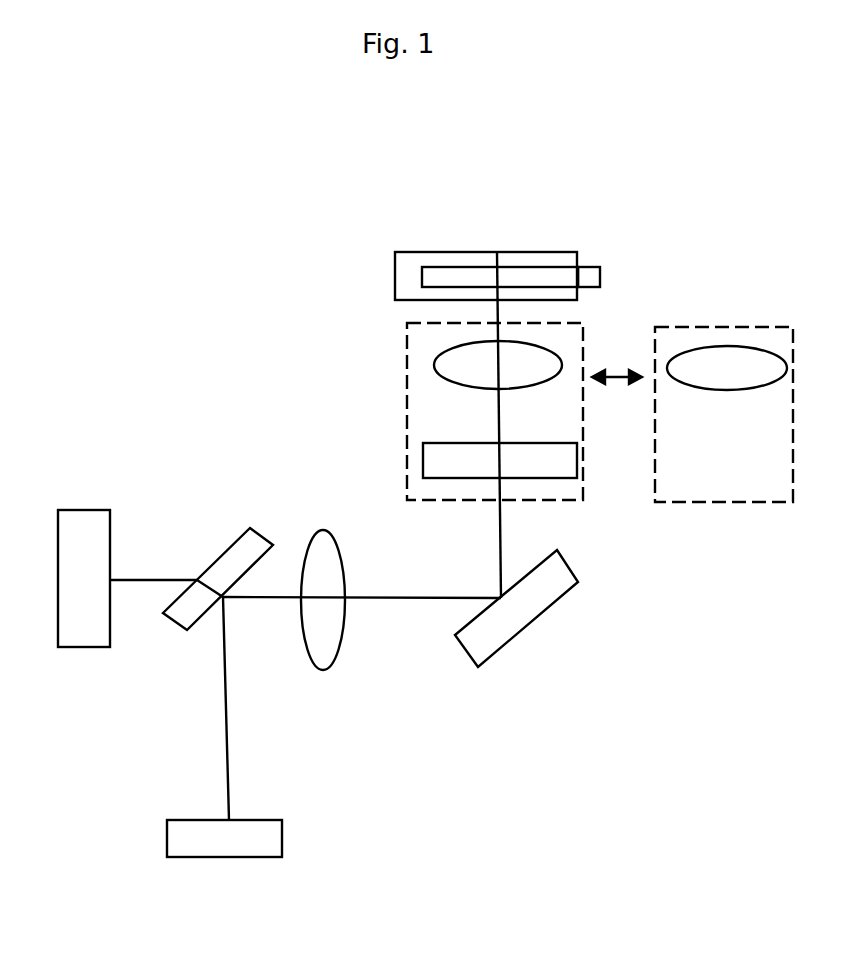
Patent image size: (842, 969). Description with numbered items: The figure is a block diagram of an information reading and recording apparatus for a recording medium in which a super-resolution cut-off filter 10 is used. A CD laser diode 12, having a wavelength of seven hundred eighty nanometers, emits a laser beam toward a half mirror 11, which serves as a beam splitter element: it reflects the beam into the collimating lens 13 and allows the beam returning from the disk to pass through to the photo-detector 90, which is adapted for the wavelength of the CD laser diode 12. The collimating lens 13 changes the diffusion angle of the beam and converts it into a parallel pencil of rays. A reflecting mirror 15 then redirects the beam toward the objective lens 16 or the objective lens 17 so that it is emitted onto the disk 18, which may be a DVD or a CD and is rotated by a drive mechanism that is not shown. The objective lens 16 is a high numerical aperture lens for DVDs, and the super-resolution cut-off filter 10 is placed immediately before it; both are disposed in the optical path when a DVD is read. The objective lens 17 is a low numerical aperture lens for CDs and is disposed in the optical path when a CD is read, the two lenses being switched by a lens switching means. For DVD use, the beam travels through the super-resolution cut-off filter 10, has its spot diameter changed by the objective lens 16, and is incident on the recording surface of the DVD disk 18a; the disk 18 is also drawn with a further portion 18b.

The photo-detector 90 is at (82, 530).
The half mirror 11 is at (233, 555).
The collimating lens 13 is at (318, 545).
The reflecting mirror 15 is at (558, 600).
The CD laser diode 12 is at (260, 843).
The disk 18 is at (443, 252).
The scale element 18b is at (518, 252).
The DVD disk 18a is at (590, 277).
The objective lens 16 is at (435, 362).
The super-resolution cut-off filter 10 is at (580, 465).
The objective lens 17 is at (756, 347).